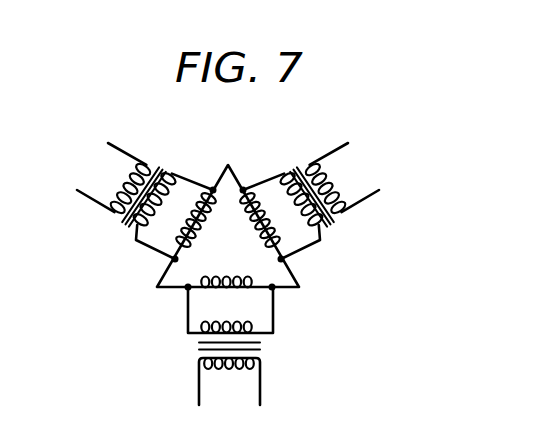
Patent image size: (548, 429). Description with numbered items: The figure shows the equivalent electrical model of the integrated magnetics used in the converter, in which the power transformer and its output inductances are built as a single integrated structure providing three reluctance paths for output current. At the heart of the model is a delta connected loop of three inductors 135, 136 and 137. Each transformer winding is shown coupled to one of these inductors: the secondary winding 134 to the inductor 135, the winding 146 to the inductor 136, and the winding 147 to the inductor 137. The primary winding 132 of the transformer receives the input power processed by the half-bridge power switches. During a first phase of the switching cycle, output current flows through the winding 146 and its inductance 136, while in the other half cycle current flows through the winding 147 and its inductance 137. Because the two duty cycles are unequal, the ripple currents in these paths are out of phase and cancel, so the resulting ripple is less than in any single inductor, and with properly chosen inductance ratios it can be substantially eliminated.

The primary winding 132 is at (122, 188).
The secondary winding 134 is at (178, 174).
The winding 146 is at (280, 176).
The inductor 135 is at (180, 244).
The inductor 136 is at (258, 228).
The inductor 137 is at (251, 279).
The winding 147 is at (252, 322).